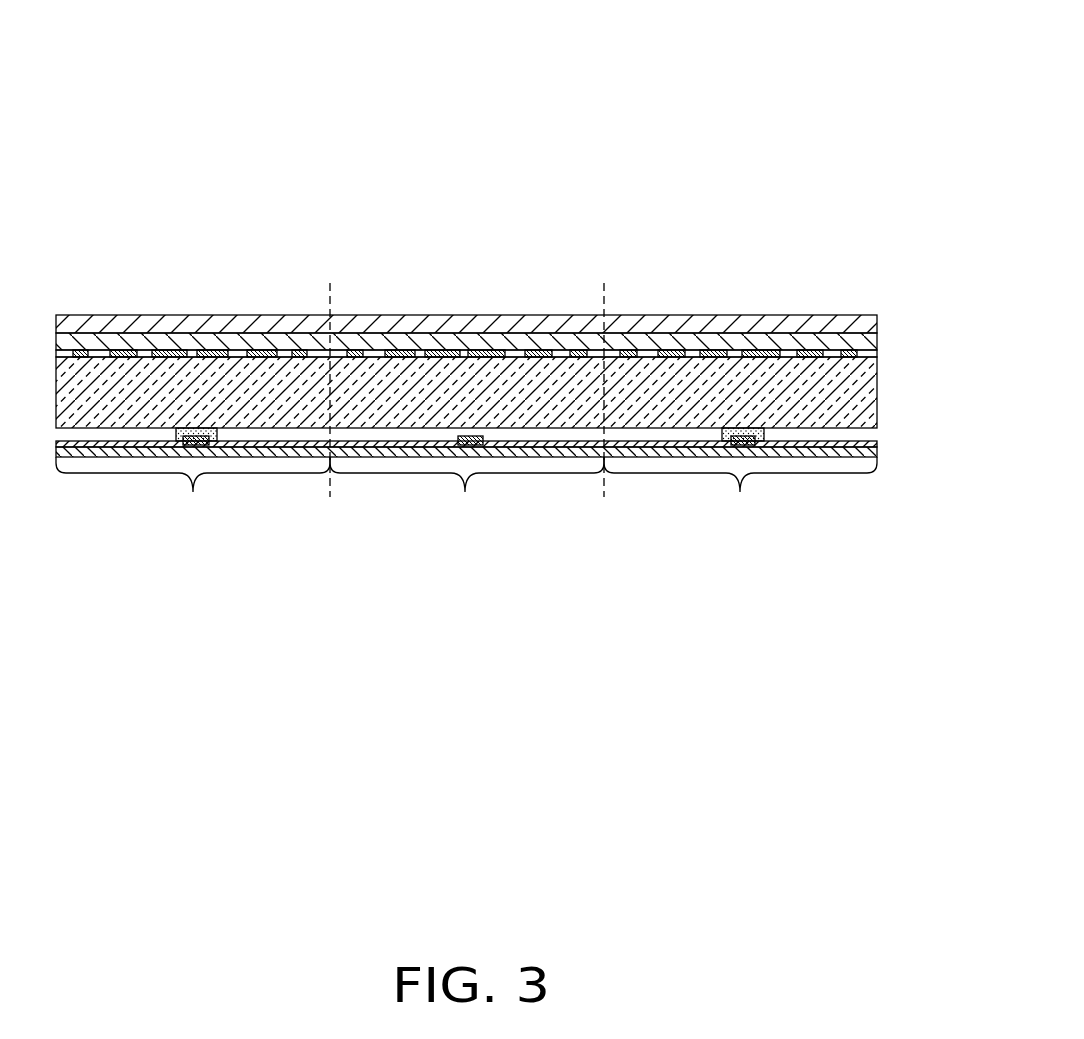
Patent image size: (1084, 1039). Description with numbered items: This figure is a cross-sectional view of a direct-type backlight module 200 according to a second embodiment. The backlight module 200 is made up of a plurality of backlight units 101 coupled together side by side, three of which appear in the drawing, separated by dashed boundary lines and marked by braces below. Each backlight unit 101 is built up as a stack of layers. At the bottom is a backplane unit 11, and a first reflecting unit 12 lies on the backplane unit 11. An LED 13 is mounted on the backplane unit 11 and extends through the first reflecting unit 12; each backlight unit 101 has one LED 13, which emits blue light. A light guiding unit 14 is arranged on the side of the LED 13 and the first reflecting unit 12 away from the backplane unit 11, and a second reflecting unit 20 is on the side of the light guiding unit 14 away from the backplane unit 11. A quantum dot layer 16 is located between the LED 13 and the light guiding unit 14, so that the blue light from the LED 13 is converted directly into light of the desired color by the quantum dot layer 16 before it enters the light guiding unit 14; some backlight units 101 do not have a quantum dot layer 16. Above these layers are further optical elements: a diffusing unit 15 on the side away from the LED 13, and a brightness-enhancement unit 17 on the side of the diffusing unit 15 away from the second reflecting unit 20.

The backlight module 200 is at (500, 25).
The brightness-enhancement unit 17 is at (866, 316).
The diffusing unit 15 is at (866, 340).
The second reflecting unit 20 is at (866, 352).
The light guiding unit 14 is at (862, 404).
The LED 13 is at (740, 428).
The quantum dot layer 16 is at (762, 433).
The first reflecting unit 12 is at (866, 443).
The backplane unit 11 is at (864, 455).
The backlight unit 101 is at (466, 491).